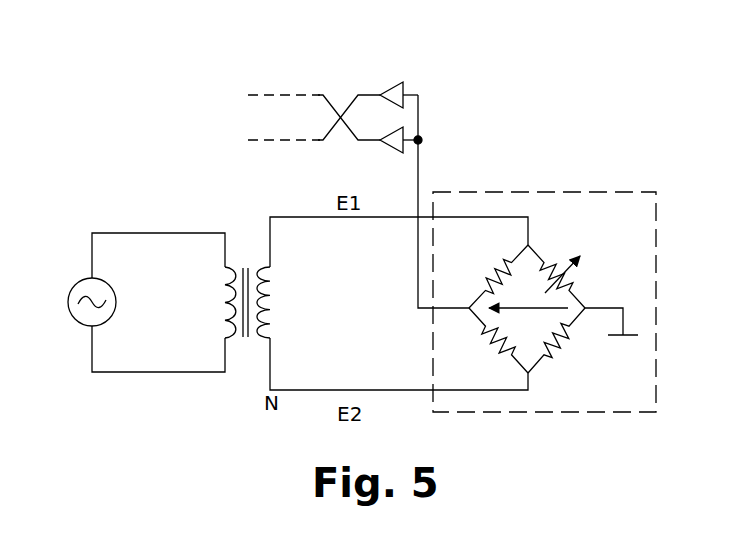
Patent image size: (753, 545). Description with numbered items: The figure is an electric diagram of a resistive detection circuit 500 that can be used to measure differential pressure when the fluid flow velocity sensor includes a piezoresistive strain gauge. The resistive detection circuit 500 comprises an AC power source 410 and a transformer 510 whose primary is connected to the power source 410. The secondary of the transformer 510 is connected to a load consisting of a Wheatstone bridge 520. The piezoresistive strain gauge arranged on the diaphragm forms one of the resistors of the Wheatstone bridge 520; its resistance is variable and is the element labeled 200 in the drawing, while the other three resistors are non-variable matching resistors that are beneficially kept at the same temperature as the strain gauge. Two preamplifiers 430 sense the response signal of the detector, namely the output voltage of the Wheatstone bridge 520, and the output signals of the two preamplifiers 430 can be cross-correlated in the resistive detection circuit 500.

The resistive detection circuit 500 is at (127, 109).
The preamplifier 430 is at (392, 86).
The AC power source 410 is at (77, 282).
The transformer 510 is at (270, 272).
The Wheatstone bridge 520 is at (544, 274).
The variable sensing resistor 200 is at (561, 252).